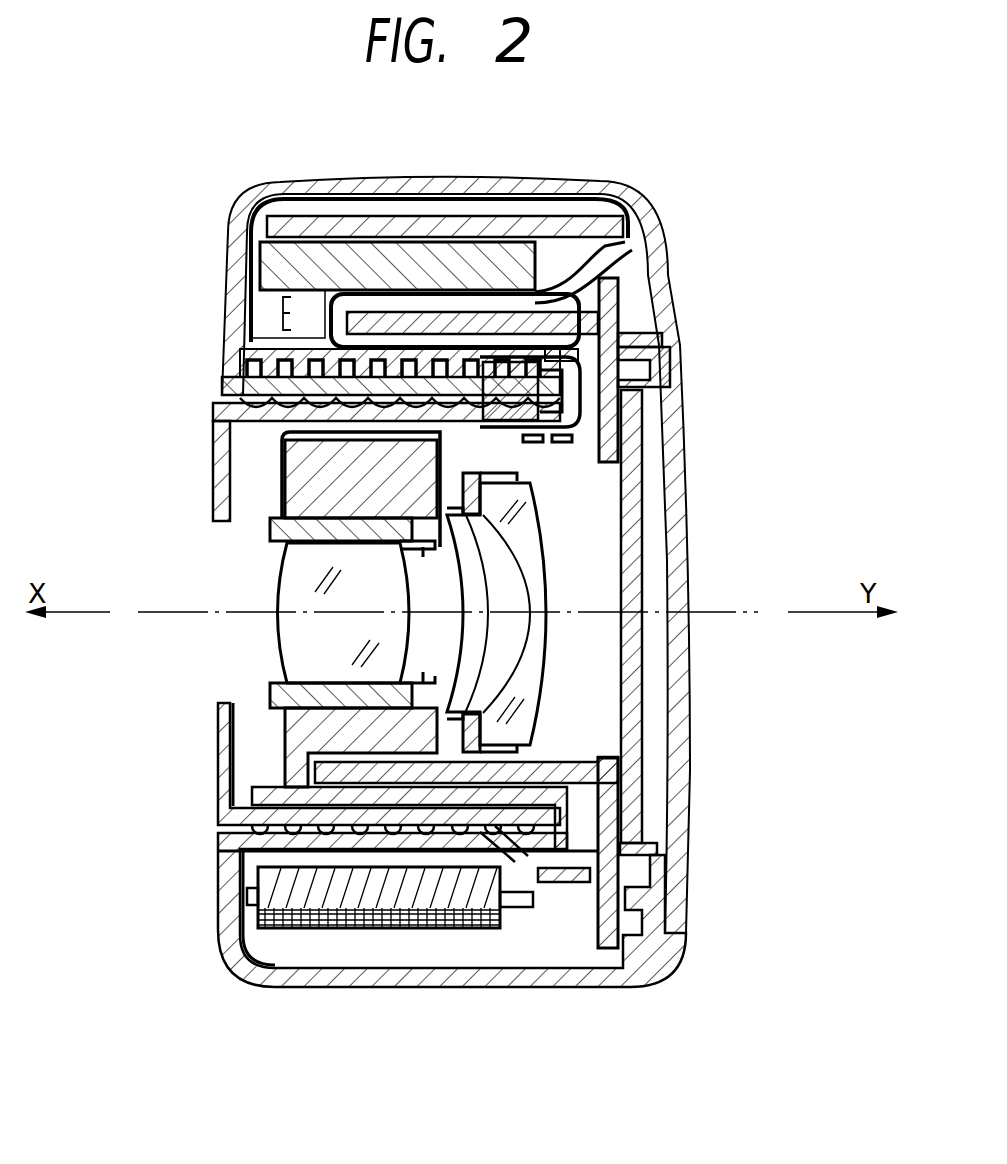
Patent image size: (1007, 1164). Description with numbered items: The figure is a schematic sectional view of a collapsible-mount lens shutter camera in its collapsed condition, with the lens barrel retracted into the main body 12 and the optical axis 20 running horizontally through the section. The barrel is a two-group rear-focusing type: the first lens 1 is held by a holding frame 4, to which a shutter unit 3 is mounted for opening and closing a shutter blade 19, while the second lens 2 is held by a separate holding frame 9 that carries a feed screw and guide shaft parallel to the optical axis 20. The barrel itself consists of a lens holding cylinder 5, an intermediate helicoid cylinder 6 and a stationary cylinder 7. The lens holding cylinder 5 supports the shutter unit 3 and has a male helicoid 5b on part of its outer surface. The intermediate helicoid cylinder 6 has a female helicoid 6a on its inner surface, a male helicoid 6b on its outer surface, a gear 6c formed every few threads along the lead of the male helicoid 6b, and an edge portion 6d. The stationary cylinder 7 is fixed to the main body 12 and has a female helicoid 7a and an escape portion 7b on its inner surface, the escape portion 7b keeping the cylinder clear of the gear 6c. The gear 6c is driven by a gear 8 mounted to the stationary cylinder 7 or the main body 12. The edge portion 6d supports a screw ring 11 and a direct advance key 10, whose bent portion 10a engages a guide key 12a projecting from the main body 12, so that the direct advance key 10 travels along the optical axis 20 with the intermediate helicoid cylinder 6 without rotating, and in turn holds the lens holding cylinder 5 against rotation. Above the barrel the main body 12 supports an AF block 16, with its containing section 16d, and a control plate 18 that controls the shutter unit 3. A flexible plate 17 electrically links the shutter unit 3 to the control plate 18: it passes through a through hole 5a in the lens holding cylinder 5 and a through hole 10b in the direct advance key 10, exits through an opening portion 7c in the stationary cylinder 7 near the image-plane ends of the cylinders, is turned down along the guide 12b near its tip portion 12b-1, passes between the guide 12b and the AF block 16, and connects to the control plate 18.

The first lens 1 is at (287, 648).
The second lens 2 is at (538, 546).
The shutter unit 3 is at (283, 493).
The holding frame 4 is at (280, 545).
The lens holding cylinder 5 is at (217, 478).
The through hole 5a is at (535, 445).
The male helicoid 5b is at (527, 420).
The intermediate helicoid cylinder 6 is at (222, 383).
The female helicoid 6a is at (253, 412).
The male helicoid 6b is at (560, 349).
The gear 6c is at (472, 925).
The edge portion 6d is at (635, 405).
The stationary cylinder 7 is at (240, 350).
The female helicoid 7a is at (452, 360).
The escape portion 7b is at (395, 356).
The opening portion 7c is at (490, 360).
The gear 8 is at (382, 932).
The holding frame 9 is at (497, 743).
The direct advance key 10 is at (253, 800).
The bent portion 10a is at (570, 805).
The through hole 10b is at (562, 446).
The screw ring 11 is at (655, 862).
The main body 12 is at (642, 436).
The guide key 12a is at (605, 762).
The guide 12b is at (448, 320).
The tip portion 12b-1 is at (303, 296).
The AF block 16 is at (237, 268).
The containing section 16d is at (247, 300).
The flexible plate 17 is at (632, 250).
The control plate 18 is at (612, 232).
The shutter blade 19 is at (424, 552).
The optical axis 20 is at (722, 614).